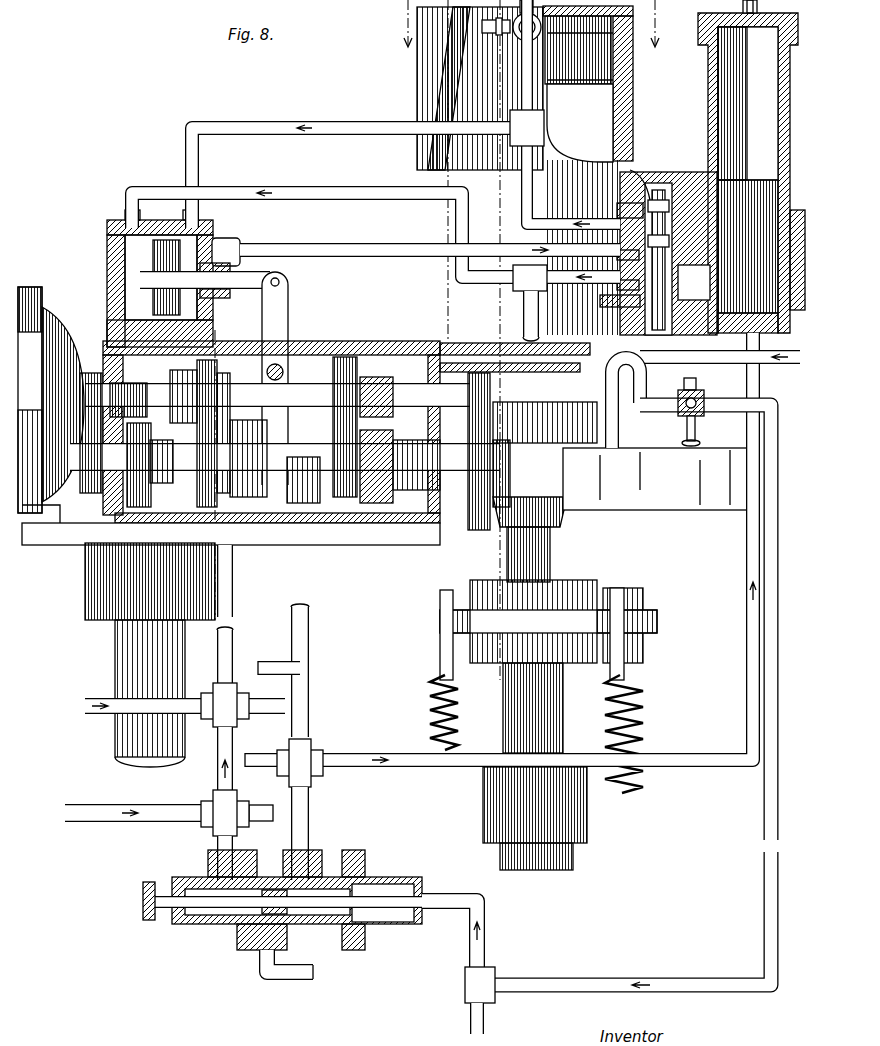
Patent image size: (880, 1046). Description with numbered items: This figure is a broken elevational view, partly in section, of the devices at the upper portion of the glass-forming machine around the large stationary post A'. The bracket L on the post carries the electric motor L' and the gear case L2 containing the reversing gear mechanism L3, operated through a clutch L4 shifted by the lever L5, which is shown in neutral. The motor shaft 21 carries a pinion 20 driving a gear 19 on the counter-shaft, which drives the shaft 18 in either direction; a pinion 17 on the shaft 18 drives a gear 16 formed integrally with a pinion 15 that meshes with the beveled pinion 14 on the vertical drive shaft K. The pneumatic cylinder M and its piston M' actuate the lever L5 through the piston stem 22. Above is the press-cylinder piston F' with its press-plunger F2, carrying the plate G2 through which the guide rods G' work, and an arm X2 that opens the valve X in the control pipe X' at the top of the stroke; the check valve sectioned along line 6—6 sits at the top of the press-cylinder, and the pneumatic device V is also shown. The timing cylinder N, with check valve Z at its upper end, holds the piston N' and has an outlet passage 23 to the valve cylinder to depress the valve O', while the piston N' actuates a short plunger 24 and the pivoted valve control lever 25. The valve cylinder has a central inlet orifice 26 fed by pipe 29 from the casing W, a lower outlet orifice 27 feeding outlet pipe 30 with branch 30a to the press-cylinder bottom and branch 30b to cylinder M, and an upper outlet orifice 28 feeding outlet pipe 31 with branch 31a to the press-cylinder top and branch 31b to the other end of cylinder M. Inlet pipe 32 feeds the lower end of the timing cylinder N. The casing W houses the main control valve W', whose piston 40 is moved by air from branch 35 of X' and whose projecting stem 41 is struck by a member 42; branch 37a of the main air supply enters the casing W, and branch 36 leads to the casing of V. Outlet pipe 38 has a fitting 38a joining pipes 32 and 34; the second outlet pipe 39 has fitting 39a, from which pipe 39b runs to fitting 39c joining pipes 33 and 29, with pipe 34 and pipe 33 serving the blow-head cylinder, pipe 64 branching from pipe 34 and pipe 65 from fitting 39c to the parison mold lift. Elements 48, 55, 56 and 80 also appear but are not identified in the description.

The section line 6— 6 is at (652, 27).
The check valve Z is at (728, 4).
The pneumatic device V is at (437, 56).
The branch 31a is at (440, 86).
The branch 31b is at (263, 128).
The branch 30b is at (333, 186).
The outlet pipe 31 is at (523, 196).
The piston F' is at (546, 88).
The timing cylinder N is at (738, 173).
The piston N' is at (748, 180).
The valve O' is at (643, 159).
The outlet passage 23 is at (672, 185).
The upper outlet orifice 28 is at (665, 200).
The central inlet orifice 26 is at (592, 292).
The lower outlet orifice 27 is at (620, 298).
The pneumatic cylinder M is at (141, 275).
The piston M' is at (206, 262).
The piston stem 22 is at (246, 275).
The pipe 29 is at (233, 611).
The electric motor L' is at (51, 385).
The lever L5 is at (281, 313).
The gear case L2 is at (308, 352).
The reversing gear mechanism L3 is at (366, 548).
The clutch L4 is at (300, 522).
The bracket L is at (231, 465).
The shaft 18 is at (511, 339).
The pinion 17 is at (478, 362).
The branch 30a is at (508, 316).
The outlet pipe 30 is at (570, 300).
The motor shaft 21 is at (92, 373).
The gear 19 is at (153, 500).
The pinion 20 is at (195, 436).
The gear 16 is at (495, 425).
The pinion 15 is at (503, 445).
The beveled pinion 14 is at (560, 515).
The arm X2 is at (662, 490).
The valve X is at (701, 412).
The control pipe X' is at (717, 622).
The short plunger 24 is at (752, 334).
The valve control lever 25 is at (742, 360).
The inlet pipe 32 is at (446, 768).
The vertical drive shaft K is at (537, 607).
The plate or bracket G2 is at (657, 622).
The guide rods G' is at (534, 690).
The press-plunger F2 is at (580, 856).
The stationary post A' is at (143, 655).
The pipe 80 is at (765, 805).
The pipe 33 is at (185, 717).
The pipe 65 is at (212, 656).
The pipe 64 is at (268, 664).
The fitting 39c is at (236, 706).
The pipe 39b is at (214, 775).
The fitting 39a is at (213, 826).
The outlet pipe 39 is at (218, 852).
The pipe 34 is at (311, 729).
The fitting 38a is at (323, 770).
The outlet pipe 38 is at (311, 827).
The pipe end 56 is at (256, 761).
The pipe 55 is at (95, 820).
The pipe stub 48 is at (252, 812).
The valve casing W is at (297, 887).
The main control valve W' is at (289, 919).
The piston 40 is at (398, 886).
The projecting stem 41 is at (166, 916).
The member 42 is at (143, 897).
The branch 37a is at (270, 980).
The branch 35 is at (488, 942).
The branch 36 is at (490, 1016).